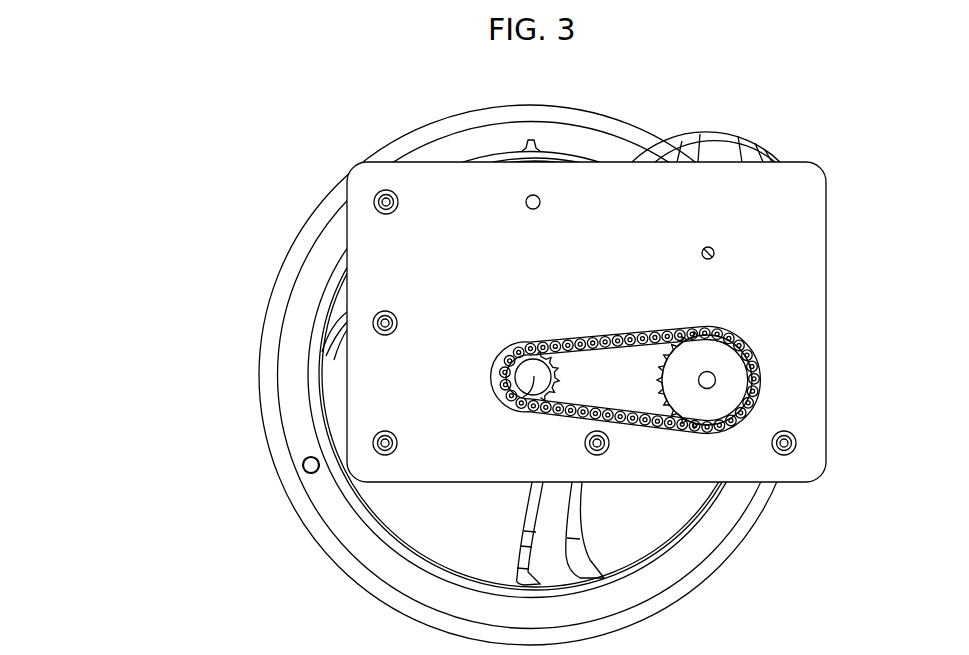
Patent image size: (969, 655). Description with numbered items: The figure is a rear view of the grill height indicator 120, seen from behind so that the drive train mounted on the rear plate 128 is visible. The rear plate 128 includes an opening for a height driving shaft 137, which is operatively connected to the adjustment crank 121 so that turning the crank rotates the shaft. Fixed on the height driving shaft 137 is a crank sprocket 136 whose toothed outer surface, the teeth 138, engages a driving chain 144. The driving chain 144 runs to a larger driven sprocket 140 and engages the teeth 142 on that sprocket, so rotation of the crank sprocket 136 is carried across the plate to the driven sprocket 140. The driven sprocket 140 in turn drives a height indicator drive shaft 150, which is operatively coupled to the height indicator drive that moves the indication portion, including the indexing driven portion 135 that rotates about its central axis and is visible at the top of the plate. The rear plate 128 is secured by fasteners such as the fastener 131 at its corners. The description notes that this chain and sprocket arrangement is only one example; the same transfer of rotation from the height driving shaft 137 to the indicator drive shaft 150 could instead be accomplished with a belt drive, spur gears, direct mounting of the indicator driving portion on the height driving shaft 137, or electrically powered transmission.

The indicator 120 is at (176, 220).
The adjustment crank 121 is at (637, 130).
The rear plate 128 is at (435, 197).
The fastener 131 is at (383, 452).
The indexing driven portion 135 is at (720, 153).
The crank sprocket 136 is at (532, 358).
The height driving shaft 137 is at (522, 393).
The teeth 138 is at (578, 347).
The driven sprocket 140 is at (712, 352).
The teeth 142 is at (657, 398).
The driving chain 144 is at (640, 332).
The height indicator drive shaft 150 is at (715, 380).